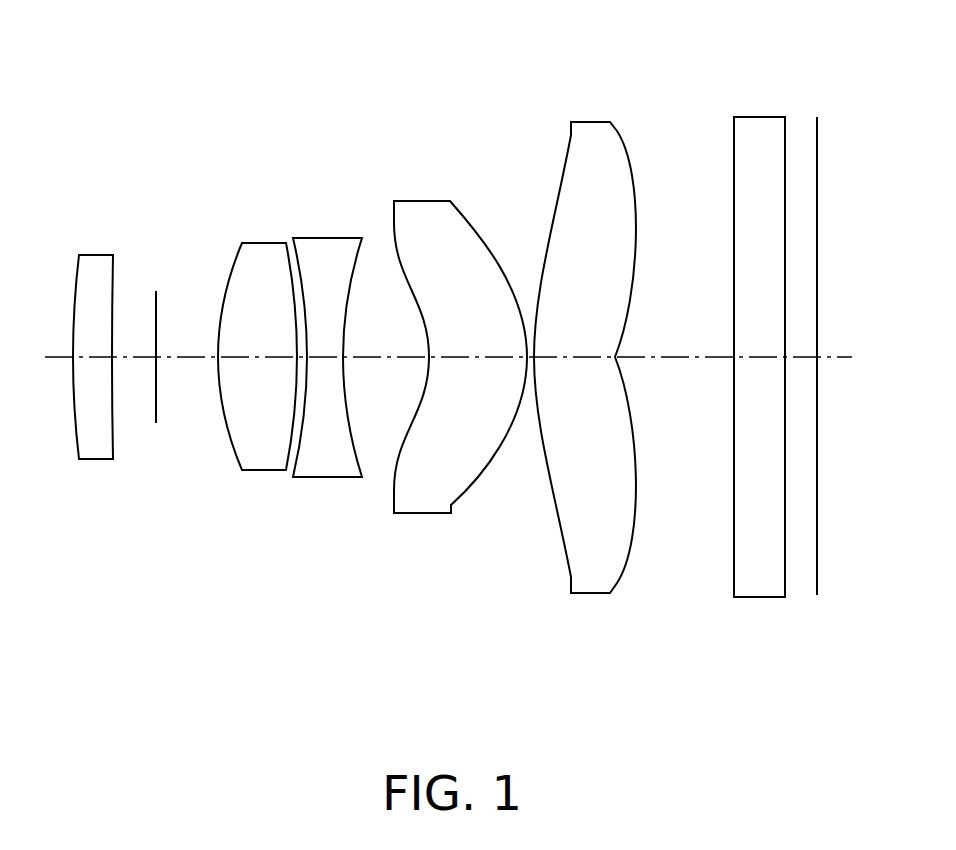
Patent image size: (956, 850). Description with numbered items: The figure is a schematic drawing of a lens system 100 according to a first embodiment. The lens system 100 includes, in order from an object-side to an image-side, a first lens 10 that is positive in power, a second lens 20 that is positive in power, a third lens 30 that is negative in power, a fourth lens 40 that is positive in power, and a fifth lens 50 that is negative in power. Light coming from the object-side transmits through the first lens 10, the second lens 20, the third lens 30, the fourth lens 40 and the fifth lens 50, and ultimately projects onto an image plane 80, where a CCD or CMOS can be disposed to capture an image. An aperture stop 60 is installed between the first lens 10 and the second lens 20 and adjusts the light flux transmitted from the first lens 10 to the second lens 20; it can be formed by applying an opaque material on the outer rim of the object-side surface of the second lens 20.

The lens system 100 is at (228, 79).
The first lens 10 is at (95, 447).
The second lens 20 is at (257, 458).
The third lens 30 is at (326, 460).
The fourth lens 40 is at (425, 502).
The fifth lens 50 is at (595, 575).
The aperture stop 60 is at (156, 410).
The image plane 80 is at (817, 570).